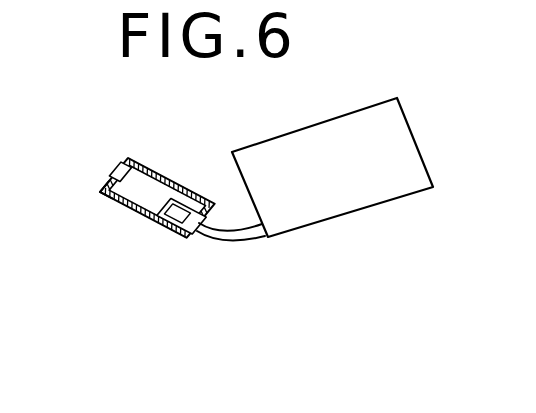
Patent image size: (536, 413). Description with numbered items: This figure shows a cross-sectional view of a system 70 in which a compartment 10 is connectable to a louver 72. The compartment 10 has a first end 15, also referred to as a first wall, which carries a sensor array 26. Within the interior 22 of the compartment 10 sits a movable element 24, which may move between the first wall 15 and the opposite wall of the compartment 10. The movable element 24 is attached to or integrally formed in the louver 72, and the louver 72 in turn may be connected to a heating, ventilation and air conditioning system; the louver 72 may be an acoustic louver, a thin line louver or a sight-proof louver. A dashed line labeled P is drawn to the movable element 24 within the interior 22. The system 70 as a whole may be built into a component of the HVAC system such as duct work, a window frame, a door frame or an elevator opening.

The compartment 10 is at (149, 186).
The first end 15 is at (157, 198).
The interior 22 is at (110, 189).
The movable element 24 is at (181, 216).
The sensor array 26 is at (120, 172).
The system 70 is at (318, 256).
The louver 72 is at (305, 128).
The position P is at (160, 214).